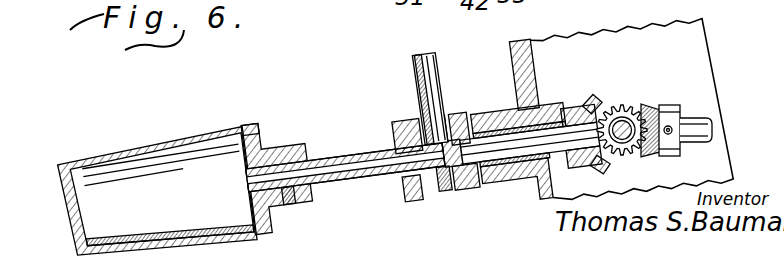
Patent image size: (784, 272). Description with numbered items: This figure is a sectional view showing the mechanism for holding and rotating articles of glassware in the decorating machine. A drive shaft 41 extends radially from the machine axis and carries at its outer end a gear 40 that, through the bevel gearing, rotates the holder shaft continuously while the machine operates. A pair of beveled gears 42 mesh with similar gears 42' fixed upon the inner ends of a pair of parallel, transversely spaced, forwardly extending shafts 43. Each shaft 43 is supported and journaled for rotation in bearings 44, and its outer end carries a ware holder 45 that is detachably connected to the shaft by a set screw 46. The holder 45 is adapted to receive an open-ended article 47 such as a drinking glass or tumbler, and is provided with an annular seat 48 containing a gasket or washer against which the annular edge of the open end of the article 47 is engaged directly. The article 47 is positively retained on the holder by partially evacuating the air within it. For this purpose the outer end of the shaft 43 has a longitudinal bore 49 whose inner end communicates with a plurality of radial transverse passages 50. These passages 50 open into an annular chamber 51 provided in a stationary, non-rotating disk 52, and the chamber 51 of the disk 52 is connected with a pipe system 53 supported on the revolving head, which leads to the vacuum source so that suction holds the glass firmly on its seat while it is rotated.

The gear 40 is at (663, 110).
The drive shaft 41 is at (706, 121).
The beveled gears 42 is at (629, 110).
The gears 42' is at (585, 123).
The shafts 43 is at (507, 163).
The bearings 44 is at (498, 128).
The ware holder 45 is at (256, 143).
The set screw 46 is at (289, 210).
The article 47 is at (155, 144).
The annular seat 48 is at (246, 128).
The longitudinal bore 49 is at (328, 170).
The radial transverse passages 50 is at (437, 170).
The annular chamber 51 is at (448, 163).
The stationary disk 52 is at (441, 116).
The pipe system 53 is at (436, 68).